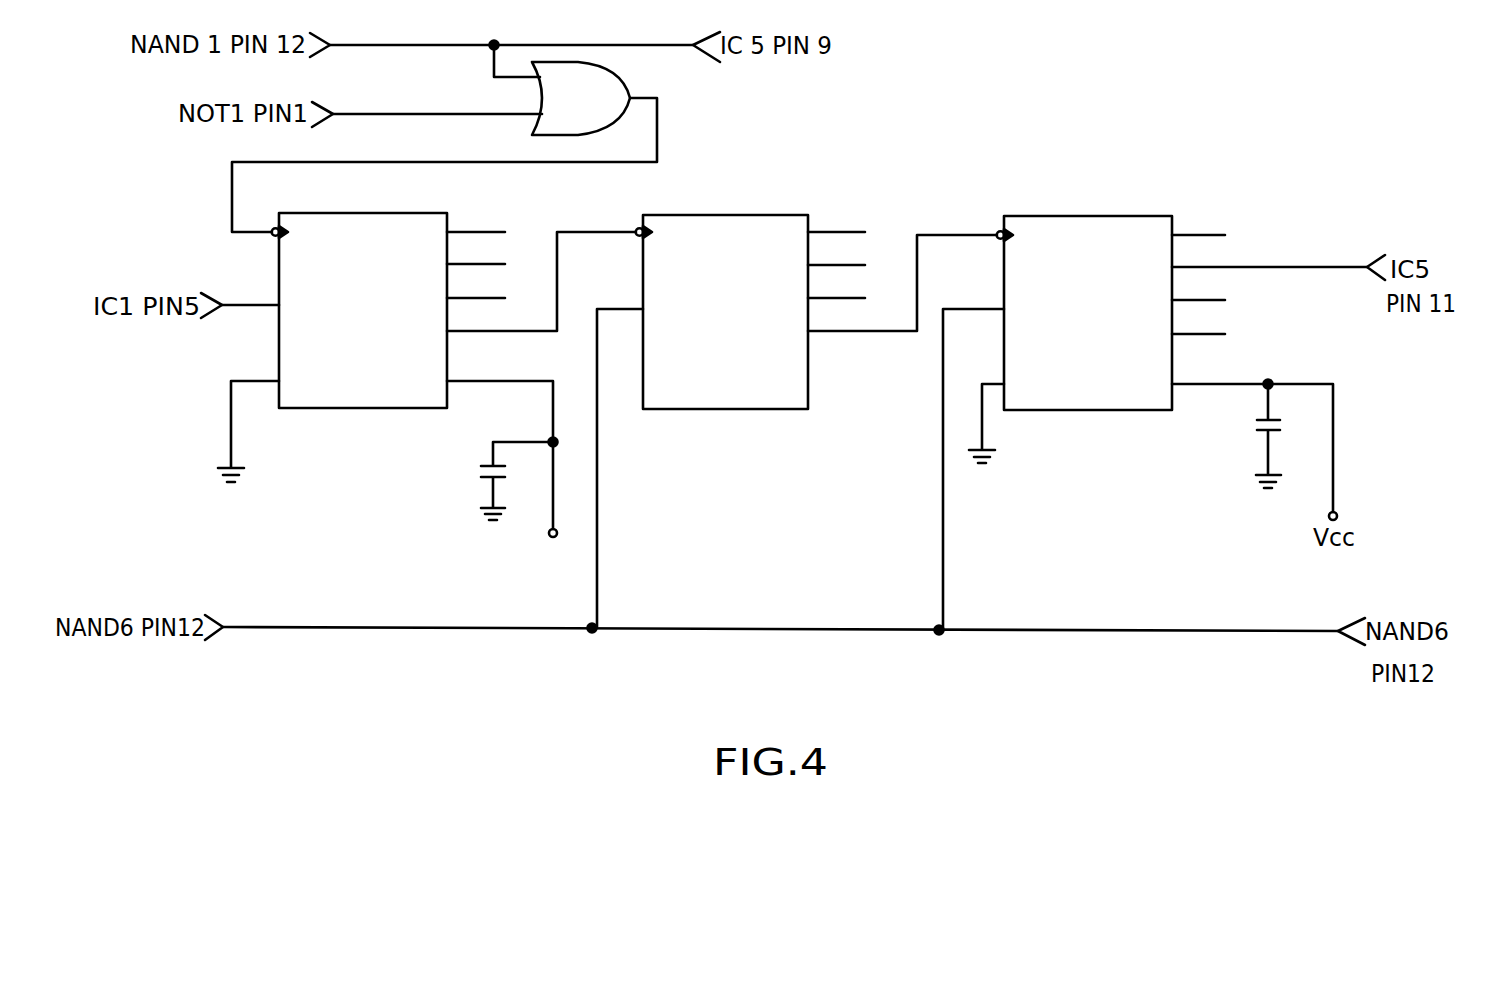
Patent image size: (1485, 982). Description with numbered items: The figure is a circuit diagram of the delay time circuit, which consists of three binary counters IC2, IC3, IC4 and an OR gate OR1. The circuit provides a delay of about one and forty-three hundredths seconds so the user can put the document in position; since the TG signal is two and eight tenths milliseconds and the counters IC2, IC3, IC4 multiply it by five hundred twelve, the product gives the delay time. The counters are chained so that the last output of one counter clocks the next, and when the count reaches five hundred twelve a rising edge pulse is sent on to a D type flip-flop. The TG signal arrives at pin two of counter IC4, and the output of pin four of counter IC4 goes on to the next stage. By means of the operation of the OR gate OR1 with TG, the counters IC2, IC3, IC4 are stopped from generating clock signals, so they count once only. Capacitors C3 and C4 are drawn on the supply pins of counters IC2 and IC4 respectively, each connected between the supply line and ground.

The binary counter IC2 is at (427, 356).
The binary counter IC3 is at (797, 405).
The binary counter IC4 is at (1155, 406).
The OR gate OR1 is at (444, 138).
The decoupling capacitor C3 is at (519, 488).
The decoupling capacitor C4 is at (1285, 434).